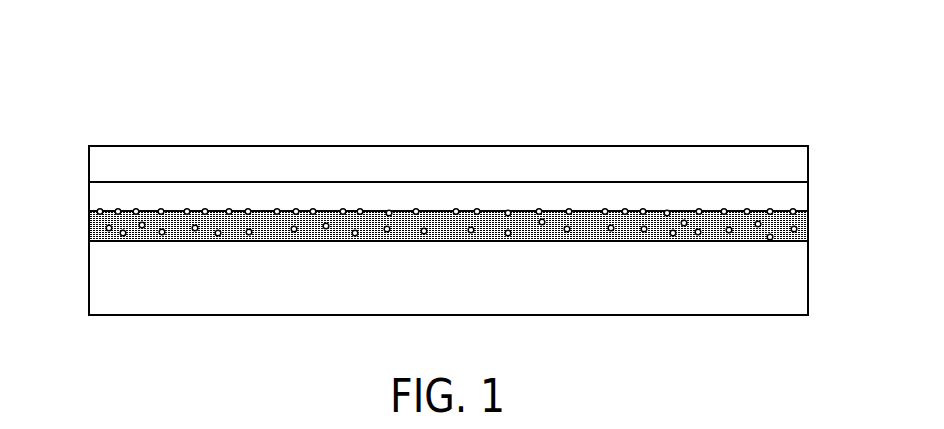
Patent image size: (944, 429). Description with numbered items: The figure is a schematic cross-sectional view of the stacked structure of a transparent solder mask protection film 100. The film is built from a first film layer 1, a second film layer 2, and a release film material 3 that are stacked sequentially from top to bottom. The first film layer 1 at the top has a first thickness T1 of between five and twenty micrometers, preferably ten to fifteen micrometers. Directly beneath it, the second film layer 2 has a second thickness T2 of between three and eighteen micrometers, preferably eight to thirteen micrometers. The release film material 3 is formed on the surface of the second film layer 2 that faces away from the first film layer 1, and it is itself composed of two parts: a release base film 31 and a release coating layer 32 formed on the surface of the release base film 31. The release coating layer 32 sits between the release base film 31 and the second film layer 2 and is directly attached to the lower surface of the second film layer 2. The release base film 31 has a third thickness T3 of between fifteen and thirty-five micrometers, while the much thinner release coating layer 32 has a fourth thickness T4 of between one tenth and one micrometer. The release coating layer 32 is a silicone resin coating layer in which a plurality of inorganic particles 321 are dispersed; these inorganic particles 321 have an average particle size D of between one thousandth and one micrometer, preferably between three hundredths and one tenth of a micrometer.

The transparent solder mask protection film 100 is at (79, 82).
The first film layer 1 is at (793, 167).
The second film layer 2 is at (793, 197).
The release film material 3 is at (865, 210).
The release base film 31 is at (785, 277).
The release coating layer 32 is at (479, 253).
The inorganic particles 321 is at (567, 232).
The first thickness T1 is at (442, 227).
The second thickness T2 is at (658, 137).
The third thickness T3 is at (85, 242).
The fourth thickness T4 is at (176, 167).
The average particle size D is at (243, 279).